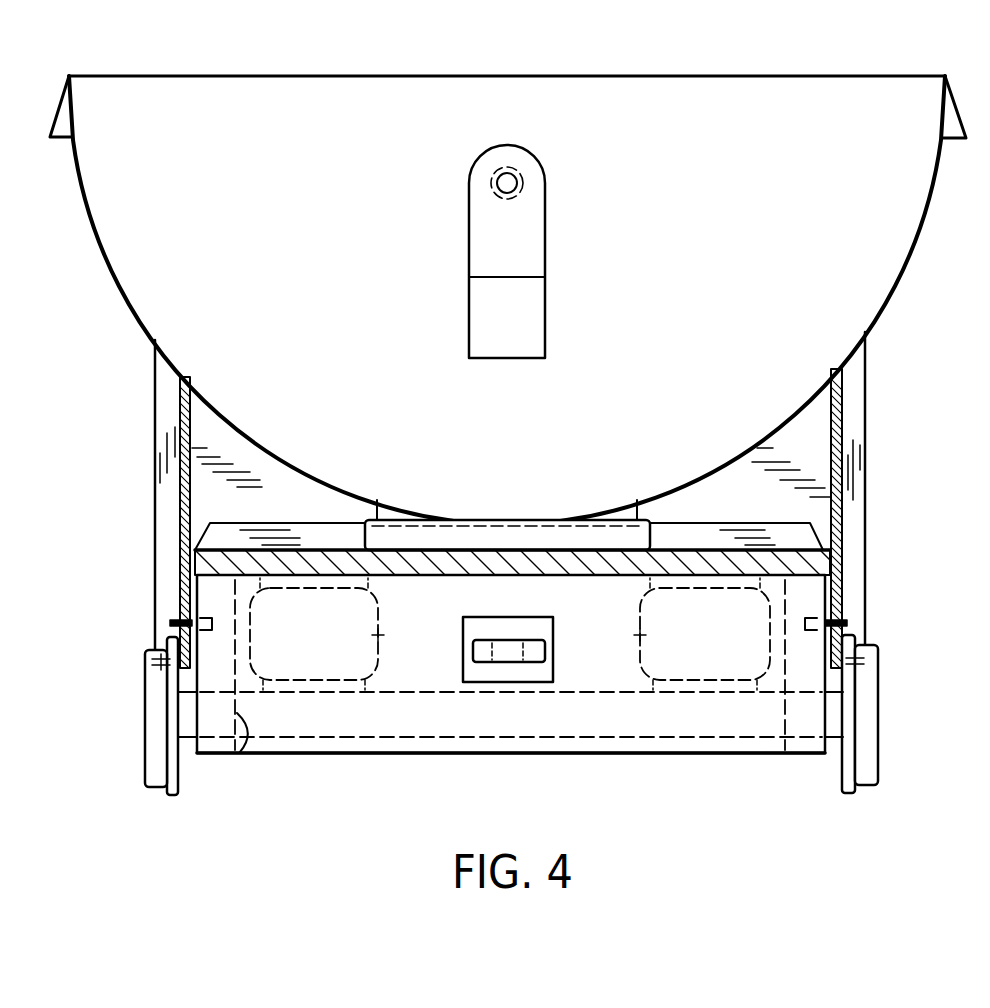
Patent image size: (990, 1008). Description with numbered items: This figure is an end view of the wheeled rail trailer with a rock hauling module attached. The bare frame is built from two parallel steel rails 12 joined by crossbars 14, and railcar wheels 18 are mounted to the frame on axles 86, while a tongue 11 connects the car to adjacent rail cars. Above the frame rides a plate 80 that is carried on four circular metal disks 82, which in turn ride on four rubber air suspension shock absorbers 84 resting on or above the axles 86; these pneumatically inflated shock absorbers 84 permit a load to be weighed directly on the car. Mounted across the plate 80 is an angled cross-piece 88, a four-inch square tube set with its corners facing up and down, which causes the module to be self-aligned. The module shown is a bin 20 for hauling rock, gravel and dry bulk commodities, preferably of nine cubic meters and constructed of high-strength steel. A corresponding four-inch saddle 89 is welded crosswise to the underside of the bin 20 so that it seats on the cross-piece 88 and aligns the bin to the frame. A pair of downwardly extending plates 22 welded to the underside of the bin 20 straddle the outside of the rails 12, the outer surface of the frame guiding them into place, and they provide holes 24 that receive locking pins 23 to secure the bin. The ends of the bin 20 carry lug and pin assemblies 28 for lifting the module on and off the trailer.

The tongue 11 is at (532, 650).
The steel rails 12 is at (237, 757).
The crossbars 14 is at (527, 745).
The railcar wheels 18 is at (150, 722).
The bin 20 is at (886, 236).
The plates 22 is at (178, 511).
The locking pins 23 is at (170, 623).
The holes 24 is at (180, 620).
The lug and pin assemblies 28 is at (548, 150).
The plate 80 is at (540, 565).
The circular metal disks 82 is at (370, 582).
The rubber air suspension shock absorbers 84 is at (378, 635).
The axles 86 is at (452, 723).
The angled cross-piece 88 is at (692, 541).
The saddles 89 is at (498, 537).